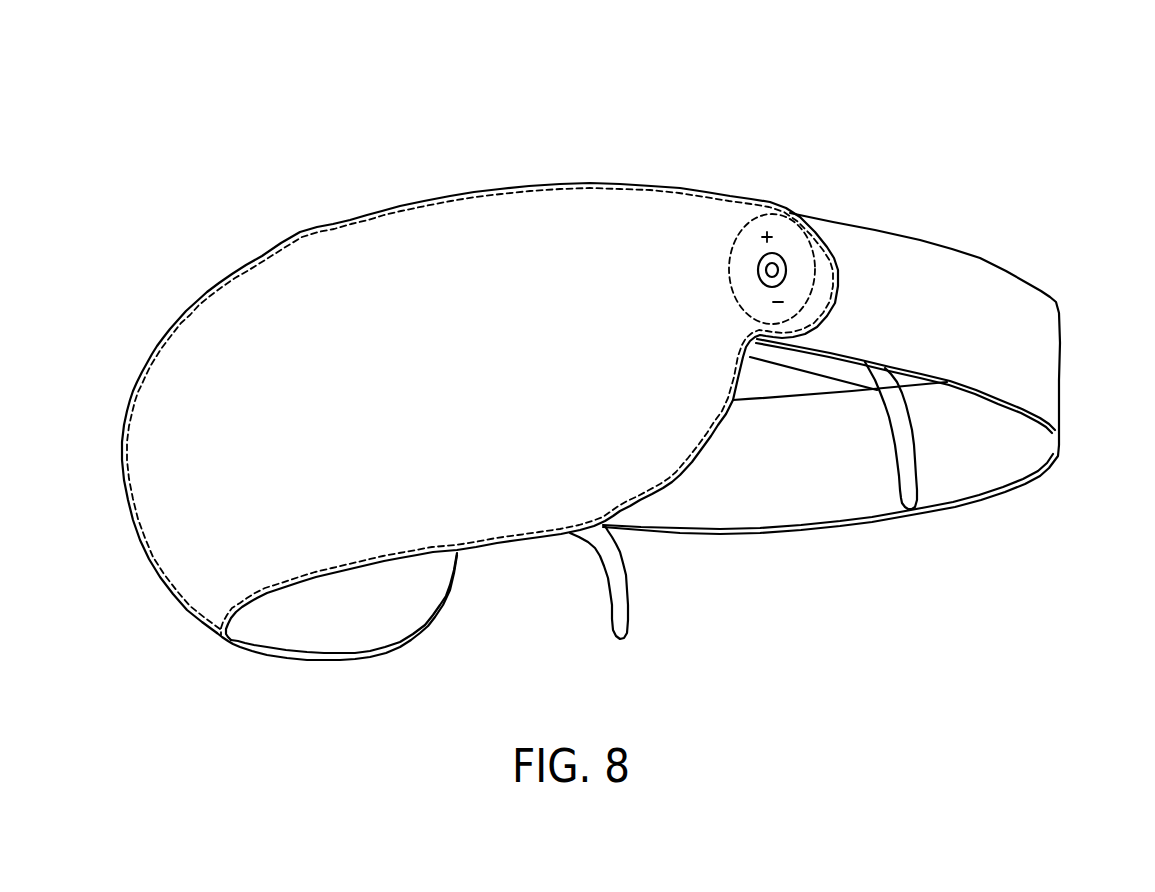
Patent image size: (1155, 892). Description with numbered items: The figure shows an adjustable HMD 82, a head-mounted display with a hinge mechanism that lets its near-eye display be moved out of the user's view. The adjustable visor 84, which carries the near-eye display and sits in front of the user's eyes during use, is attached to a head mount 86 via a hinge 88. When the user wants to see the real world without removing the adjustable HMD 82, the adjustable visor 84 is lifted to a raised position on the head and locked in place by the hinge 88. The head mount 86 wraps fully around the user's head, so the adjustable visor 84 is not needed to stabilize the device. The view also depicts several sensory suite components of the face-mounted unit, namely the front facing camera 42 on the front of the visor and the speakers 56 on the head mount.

The adjustable HMD 82 is at (198, 122).
The front facing camera 42 is at (143, 355).
The adjustable visor 84 is at (397, 230).
The hinge 88 is at (784, 273).
The head mount 86 is at (1023, 297).
The speakers 56 is at (913, 487).